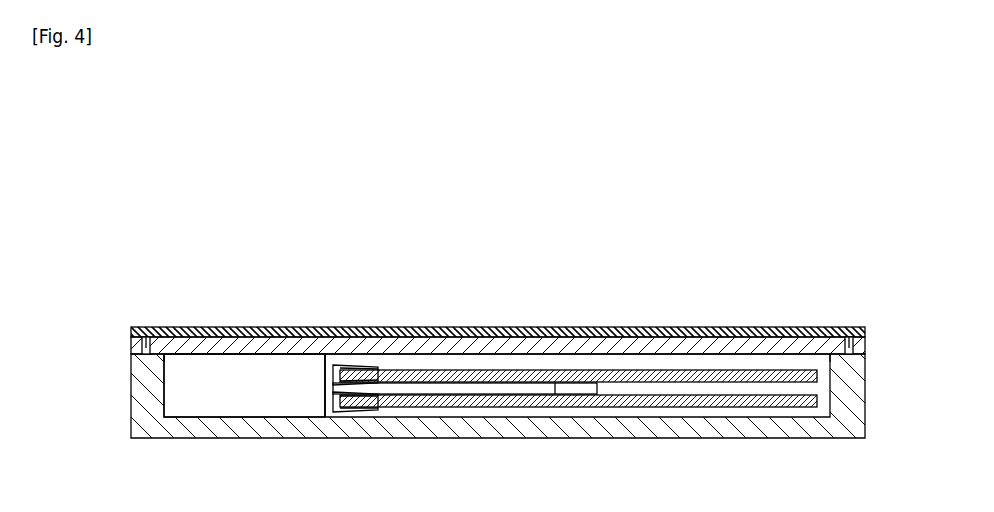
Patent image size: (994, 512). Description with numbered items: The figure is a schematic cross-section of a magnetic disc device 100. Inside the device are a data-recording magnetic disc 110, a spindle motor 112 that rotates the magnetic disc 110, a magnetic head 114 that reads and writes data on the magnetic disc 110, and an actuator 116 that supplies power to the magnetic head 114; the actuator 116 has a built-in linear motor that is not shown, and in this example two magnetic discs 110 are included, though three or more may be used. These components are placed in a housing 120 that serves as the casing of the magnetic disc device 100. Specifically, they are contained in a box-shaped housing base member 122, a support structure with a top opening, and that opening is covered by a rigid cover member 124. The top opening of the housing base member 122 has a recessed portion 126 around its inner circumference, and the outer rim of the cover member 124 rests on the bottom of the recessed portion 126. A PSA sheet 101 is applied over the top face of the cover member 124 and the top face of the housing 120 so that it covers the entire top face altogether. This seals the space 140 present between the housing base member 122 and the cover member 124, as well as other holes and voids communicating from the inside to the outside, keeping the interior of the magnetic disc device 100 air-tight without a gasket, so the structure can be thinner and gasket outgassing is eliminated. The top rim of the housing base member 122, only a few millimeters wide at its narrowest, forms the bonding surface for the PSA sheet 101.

The magnetic disc device 100 is at (819, 280).
The PSA sheet 101 is at (620, 327).
The magnetic disc 110 is at (676, 407).
The spindle motor 112 is at (548, 392).
The magnetic head 114 is at (335, 353).
The actuator 116 is at (227, 410).
The housing 120 is at (460, 371).
The housing base member 122 is at (131, 410).
The cover member 124 is at (229, 351).
The recessed portion 126 is at (163, 356).
The space 140 is at (142, 346).